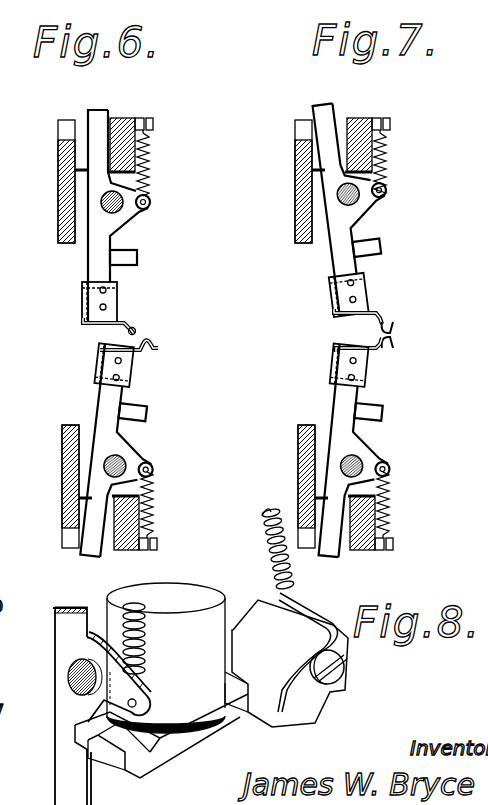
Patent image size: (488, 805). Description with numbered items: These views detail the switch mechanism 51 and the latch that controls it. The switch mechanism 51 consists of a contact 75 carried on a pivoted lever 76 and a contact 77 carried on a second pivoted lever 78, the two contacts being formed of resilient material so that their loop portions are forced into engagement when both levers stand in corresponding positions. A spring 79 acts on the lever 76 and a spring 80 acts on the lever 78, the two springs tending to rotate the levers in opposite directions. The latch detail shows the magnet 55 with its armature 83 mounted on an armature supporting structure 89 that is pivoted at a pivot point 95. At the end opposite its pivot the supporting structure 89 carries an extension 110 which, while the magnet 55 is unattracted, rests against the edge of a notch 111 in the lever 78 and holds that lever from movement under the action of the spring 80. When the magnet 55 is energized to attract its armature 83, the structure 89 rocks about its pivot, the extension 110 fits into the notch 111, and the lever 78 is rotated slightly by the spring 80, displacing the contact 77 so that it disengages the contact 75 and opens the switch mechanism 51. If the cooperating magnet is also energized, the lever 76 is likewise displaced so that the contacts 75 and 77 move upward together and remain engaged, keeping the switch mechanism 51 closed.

In FIG. 6, the switch mechanism 51 is at (123, 343).
In FIG. 7, the switch mechanism 51 is at (394, 330).
In FIG. 8, the magnet 55 is at (207, 623).
In FIG. 6, the contact 75 is at (130, 323).
In FIG. 7, the contact 75 is at (378, 315).
In FIG. 6, the pivoted lever 76 is at (93, 248).
In FIG. 7, the pivoted lever 76 is at (338, 258).
In FIG. 6, the contact 77 is at (153, 343).
In FIG. 7, the contact 77 is at (383, 352).
In FIG. 6, the pivoted lever 78 is at (107, 403).
In FIG. 7, the pivoted lever 78 is at (338, 410).
In FIG. 8, the pivoted lever 78 is at (58, 643).
In FIG. 6, the spring 79 is at (152, 160).
In FIG. 6, the spring 80 is at (155, 500).
In FIG. 8, the spring 80 is at (137, 603).
In FIG. 8, the armature 83 is at (237, 702).
In FIG. 8, the armature supporting structure 89 is at (173, 755).
In FIG. 8, the pivot point 95 is at (334, 661).
In FIG. 8, the extension 110 is at (101, 763).
In FIG. 8, the notch 111 is at (77, 738).